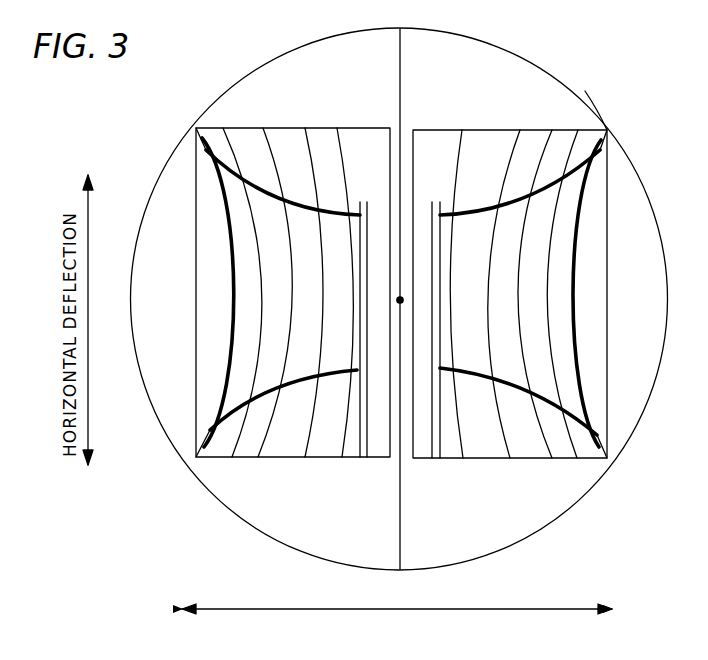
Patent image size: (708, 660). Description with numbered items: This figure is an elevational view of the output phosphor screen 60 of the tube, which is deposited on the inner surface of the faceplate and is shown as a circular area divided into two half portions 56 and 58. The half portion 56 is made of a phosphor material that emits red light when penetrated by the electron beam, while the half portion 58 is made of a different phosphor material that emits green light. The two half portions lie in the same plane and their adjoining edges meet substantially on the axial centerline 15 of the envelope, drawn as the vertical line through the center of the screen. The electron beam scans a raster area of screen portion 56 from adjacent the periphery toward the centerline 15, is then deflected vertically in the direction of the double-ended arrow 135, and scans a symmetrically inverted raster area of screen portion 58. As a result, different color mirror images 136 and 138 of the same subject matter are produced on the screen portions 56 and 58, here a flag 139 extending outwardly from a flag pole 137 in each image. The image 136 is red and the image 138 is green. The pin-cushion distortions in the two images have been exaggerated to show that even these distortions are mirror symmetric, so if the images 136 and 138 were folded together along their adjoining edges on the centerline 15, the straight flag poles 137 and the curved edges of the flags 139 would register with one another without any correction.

The axial centerline 15 is at (400, 300).
The half portion 56 is at (365, 33).
The half portion 58 is at (505, 60).
The output phosphor screen 60 is at (596, 112).
The double-ended arrow 135 is at (558, 609).
The mirror image 136 is at (280, 129).
The flag pole 137 is at (364, 200).
The mirror image 138 is at (525, 130).
The flag 139 is at (242, 274).